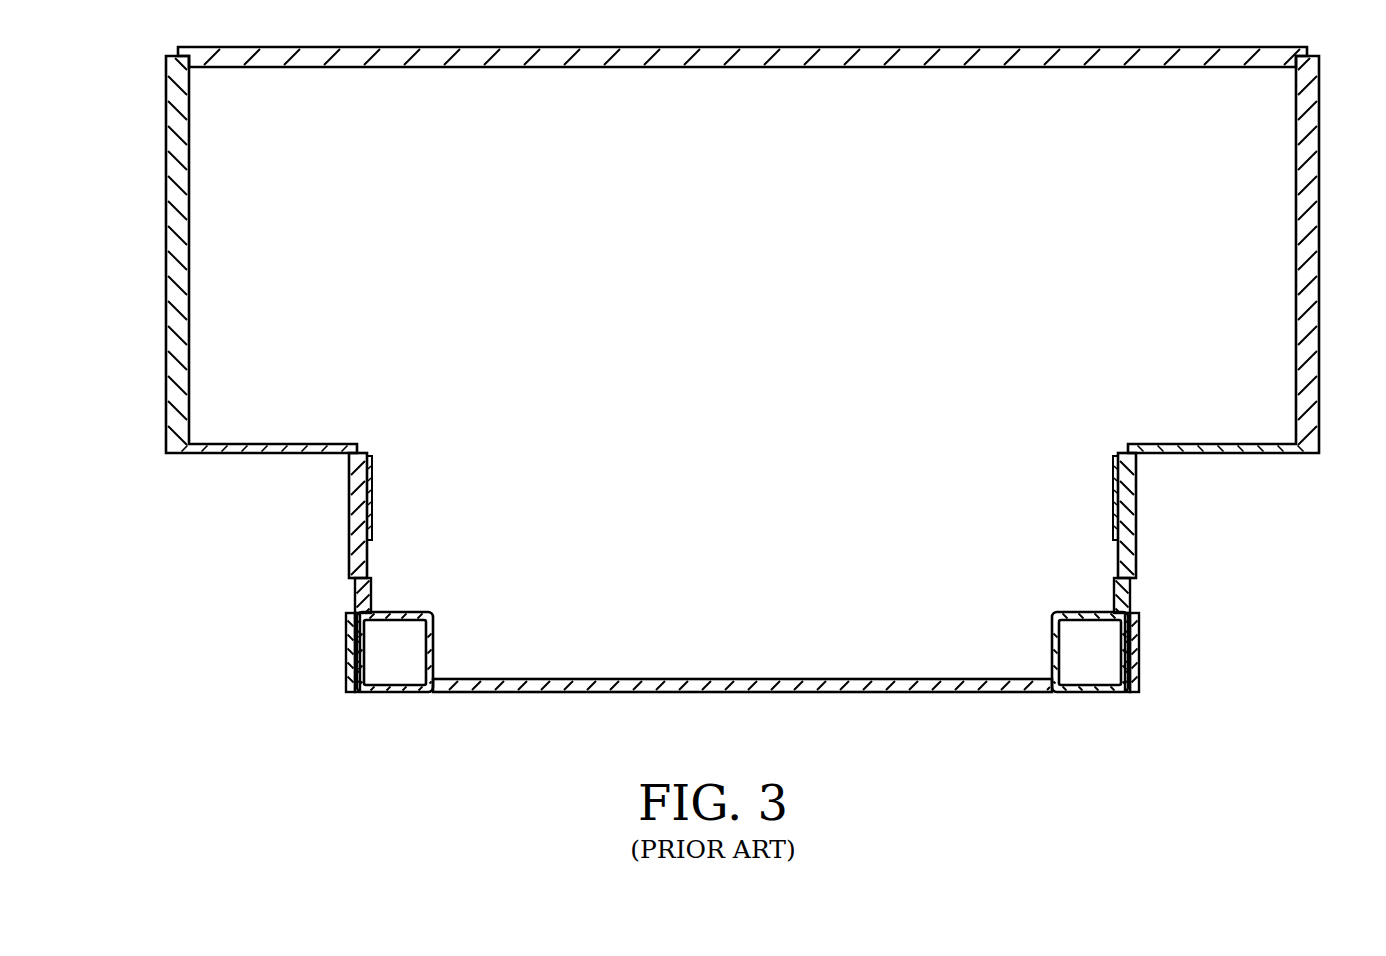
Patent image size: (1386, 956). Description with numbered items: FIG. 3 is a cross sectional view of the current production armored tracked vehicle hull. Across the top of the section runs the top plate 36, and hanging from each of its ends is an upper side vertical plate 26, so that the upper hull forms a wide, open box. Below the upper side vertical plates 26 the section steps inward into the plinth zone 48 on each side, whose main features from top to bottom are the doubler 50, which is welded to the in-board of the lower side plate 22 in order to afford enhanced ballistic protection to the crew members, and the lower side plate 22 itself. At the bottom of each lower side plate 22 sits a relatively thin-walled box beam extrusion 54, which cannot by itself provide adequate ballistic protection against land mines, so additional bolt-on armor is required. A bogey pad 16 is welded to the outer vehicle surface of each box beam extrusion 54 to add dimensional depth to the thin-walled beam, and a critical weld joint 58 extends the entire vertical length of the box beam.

The bogey pad 16 is at (347, 658).
The lower vertical side plate 22 is at (350, 503).
The upper side vertical plate 26 is at (166, 222).
The top plate 36 is at (759, 47).
The plinth zone 48 is at (302, 543).
The doubler 50 is at (372, 466).
The box beam extrusion 54 is at (396, 612).
The weld joint 58 is at (355, 582).